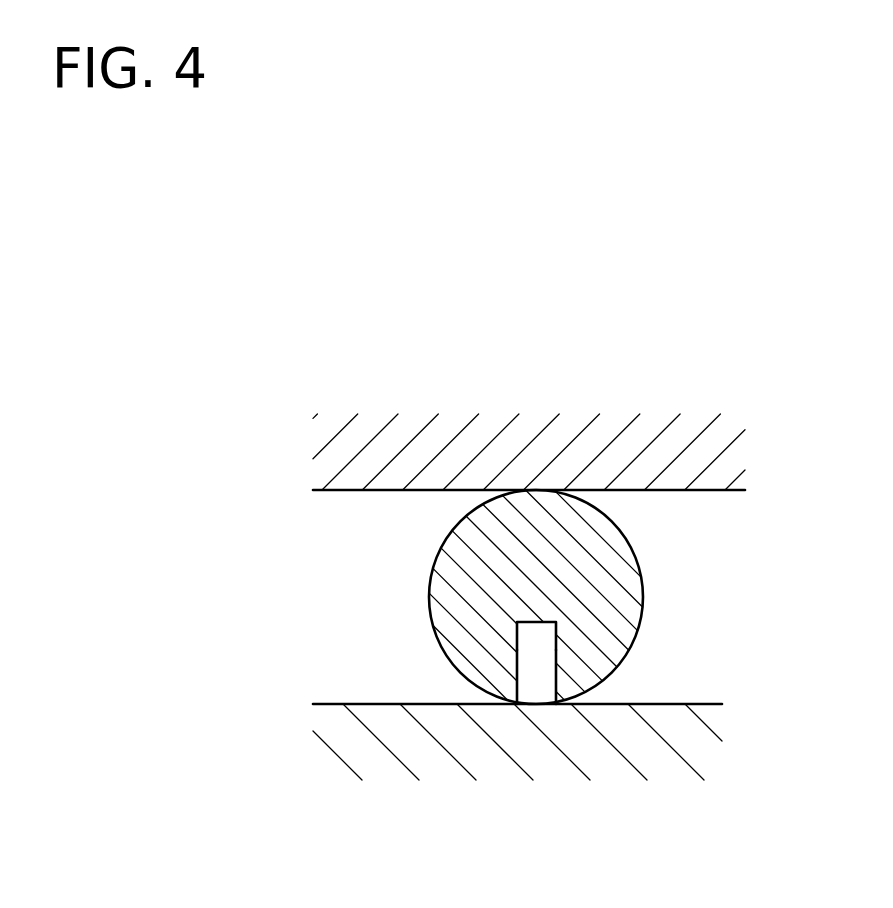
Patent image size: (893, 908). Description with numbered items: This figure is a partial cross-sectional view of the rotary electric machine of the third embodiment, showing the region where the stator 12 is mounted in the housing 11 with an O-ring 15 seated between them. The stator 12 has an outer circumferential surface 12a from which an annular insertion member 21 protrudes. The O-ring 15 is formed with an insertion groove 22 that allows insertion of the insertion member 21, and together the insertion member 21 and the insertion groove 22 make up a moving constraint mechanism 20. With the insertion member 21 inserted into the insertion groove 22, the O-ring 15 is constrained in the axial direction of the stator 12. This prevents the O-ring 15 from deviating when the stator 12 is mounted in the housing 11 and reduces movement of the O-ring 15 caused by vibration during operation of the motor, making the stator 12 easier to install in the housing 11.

The housing 11 is at (543, 430).
The stator 12 is at (504, 694).
The outer circumferential surface 12a is at (380, 703).
The O-ring 15 is at (645, 583).
The moving constraint mechanism 20 is at (641, 660).
The insertion member 21 is at (536, 657).
The insertion groove 22 is at (535, 625).